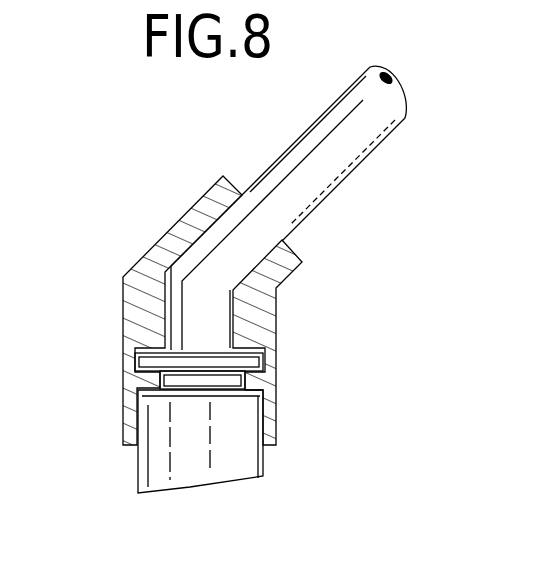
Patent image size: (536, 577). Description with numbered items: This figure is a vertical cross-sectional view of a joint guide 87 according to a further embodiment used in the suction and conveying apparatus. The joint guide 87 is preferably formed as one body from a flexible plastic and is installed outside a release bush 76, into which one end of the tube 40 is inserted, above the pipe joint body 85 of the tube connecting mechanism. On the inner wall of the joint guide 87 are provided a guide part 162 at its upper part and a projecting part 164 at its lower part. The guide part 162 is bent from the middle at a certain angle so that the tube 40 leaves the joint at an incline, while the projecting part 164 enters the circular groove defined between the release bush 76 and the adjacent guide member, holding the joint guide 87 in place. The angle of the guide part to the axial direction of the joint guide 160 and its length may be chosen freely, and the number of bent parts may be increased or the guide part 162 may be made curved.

The tube 40 is at (374, 129).
The joint guide 160 is at (214, 310).
The guide part 162 is at (266, 301).
The release bush 76 is at (252, 363).
The projecting part 164 is at (249, 382).
The pipe joint body 85 is at (154, 462).
The joint guide 87 is at (212, 437).